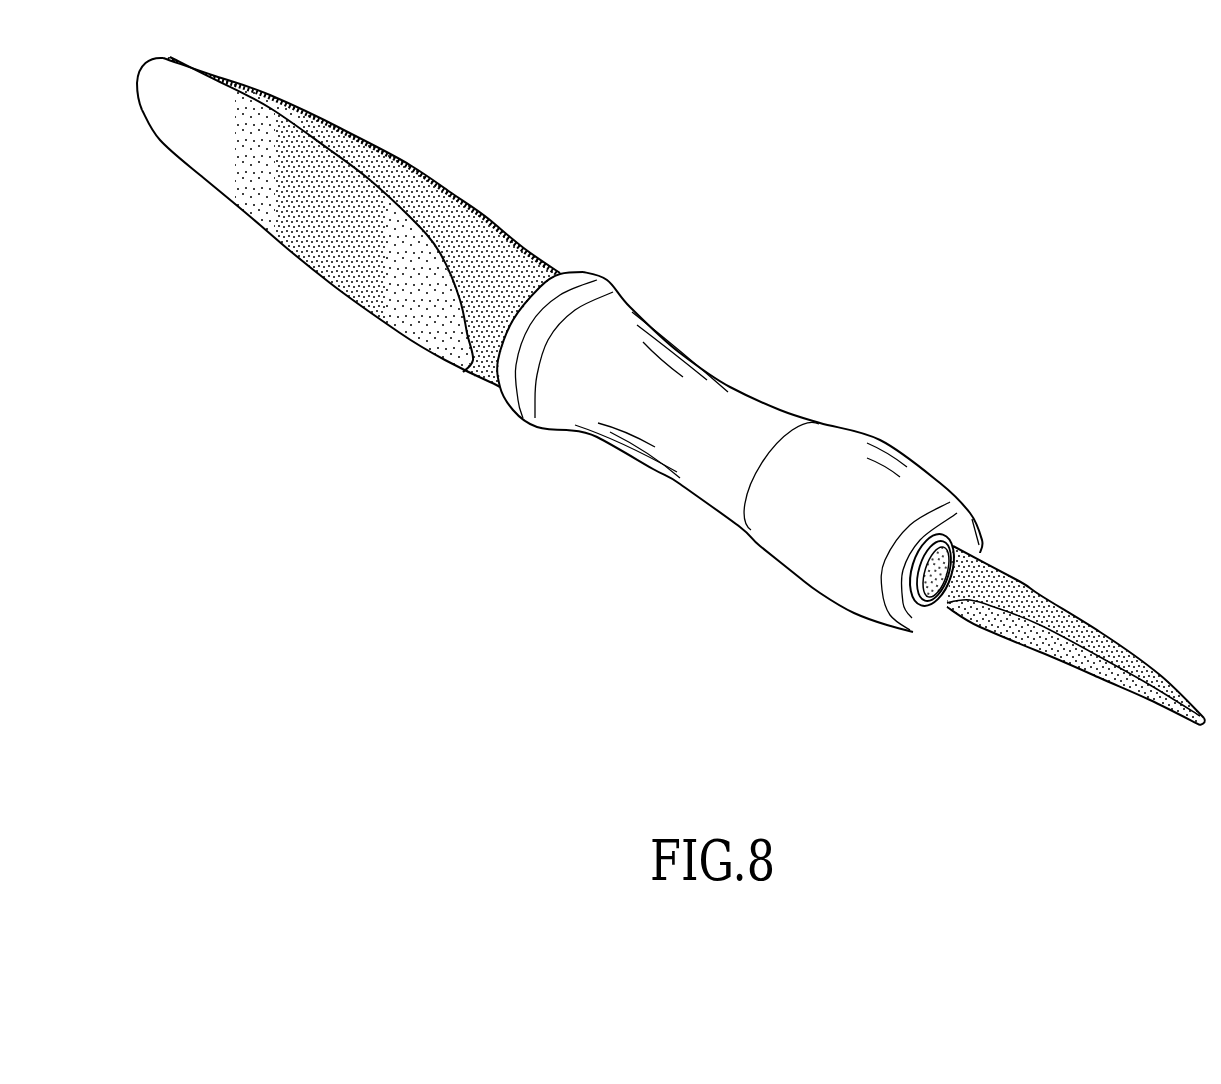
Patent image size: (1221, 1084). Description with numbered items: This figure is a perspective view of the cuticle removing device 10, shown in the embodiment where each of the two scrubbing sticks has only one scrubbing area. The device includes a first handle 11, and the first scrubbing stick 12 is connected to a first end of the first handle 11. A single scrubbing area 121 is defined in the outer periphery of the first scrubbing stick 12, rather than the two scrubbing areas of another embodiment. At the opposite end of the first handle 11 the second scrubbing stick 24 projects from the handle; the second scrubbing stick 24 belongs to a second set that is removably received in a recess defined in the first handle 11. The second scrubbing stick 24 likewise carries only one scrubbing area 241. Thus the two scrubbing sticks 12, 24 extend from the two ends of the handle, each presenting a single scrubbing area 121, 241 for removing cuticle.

The cuticle removing device 10 is at (888, 370).
The first handle 11 is at (673, 363).
The first scrubbing stick 12 is at (410, 165).
The scrubbing area 121 is at (350, 258).
The second scrubbing stick 24 is at (1008, 577).
The scrubbing area 241 is at (1040, 640).